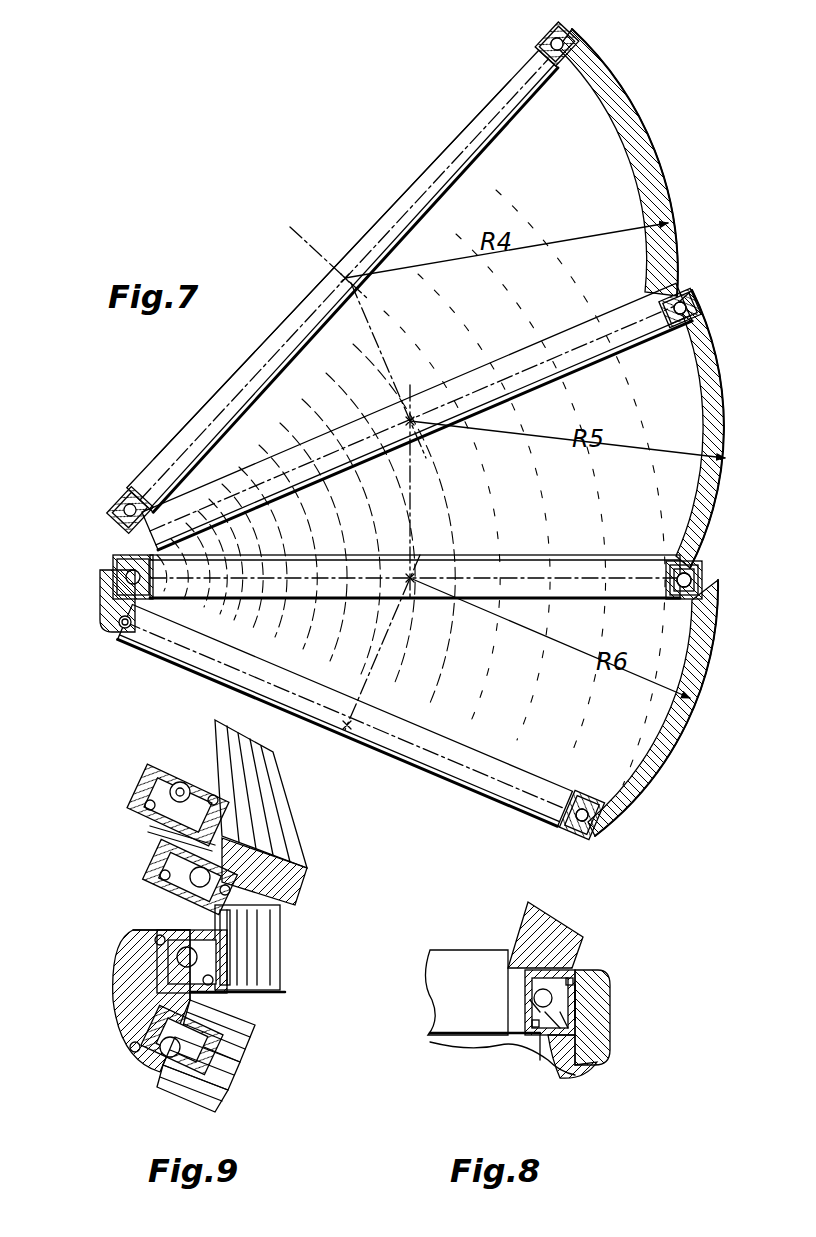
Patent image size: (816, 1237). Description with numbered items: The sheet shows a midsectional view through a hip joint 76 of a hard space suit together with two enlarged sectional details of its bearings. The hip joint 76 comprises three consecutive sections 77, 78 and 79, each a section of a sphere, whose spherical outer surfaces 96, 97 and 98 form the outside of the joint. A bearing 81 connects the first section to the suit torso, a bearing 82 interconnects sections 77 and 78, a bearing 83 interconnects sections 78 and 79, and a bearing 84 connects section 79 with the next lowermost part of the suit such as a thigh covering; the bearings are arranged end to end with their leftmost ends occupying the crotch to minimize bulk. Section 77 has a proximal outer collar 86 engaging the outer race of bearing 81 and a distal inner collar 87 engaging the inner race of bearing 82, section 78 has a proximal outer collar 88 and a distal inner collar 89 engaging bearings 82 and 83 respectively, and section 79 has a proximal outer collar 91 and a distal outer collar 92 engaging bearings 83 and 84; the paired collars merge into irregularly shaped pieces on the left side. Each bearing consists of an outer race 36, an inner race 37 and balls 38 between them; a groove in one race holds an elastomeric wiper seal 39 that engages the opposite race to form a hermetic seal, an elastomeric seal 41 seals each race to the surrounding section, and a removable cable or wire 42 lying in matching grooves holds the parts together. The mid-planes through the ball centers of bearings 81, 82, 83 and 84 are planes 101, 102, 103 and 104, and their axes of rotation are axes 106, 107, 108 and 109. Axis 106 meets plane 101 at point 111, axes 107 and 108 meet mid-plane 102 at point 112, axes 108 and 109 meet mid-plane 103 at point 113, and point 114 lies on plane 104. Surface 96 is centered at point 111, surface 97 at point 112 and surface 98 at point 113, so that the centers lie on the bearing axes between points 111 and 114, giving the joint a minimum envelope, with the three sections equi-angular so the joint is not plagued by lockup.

In FIG. 9, the outer race 36 is at (147, 790).
In FIG. 8, the outer race 36 is at (588, 1002).
In FIG. 9, the inner race 37 is at (190, 770).
In FIG. 8, the inner race 37 is at (540, 1040).
In FIG. 9, the balls 38 is at (168, 775).
In FIG. 8, the balls 38 is at (555, 972).
In FIG. 9, the elastomeric wiper seal 39 is at (238, 822).
In FIG. 8, the elastomeric wiper seal 39 is at (560, 1065).
In FIG. 9, the elastomeric seal 41 is at (175, 815).
In FIG. 8, the elastomeric seal 41 is at (572, 1025).
In FIG. 9, the cable or wire 42 is at (168, 800).
In FIG. 8, the cable or wire 42 is at (580, 985).
In FIG. 7, the hip joint 76 is at (392, 203).
In FIG. 7, the section 77 is at (597, 157).
In FIG. 9, the section 77 is at (268, 788).
In FIG. 7, the section 78 is at (708, 357).
In FIG. 9, the section 78 is at (275, 888).
In FIG. 8, the section 78 is at (548, 920).
In FIG. 7, the section 79 is at (662, 645).
In FIG. 9, the section 79 is at (243, 1023).
In FIG. 8, the section 79 is at (590, 1052).
In FIG. 7, the bearing 81 is at (570, 30).
In FIG. 9, the bearing 81 is at (143, 768).
In FIG. 7, the bearing 82 is at (698, 298).
In FIG. 9, the bearing 82 is at (150, 862).
In FIG. 7, the bearing 83 is at (705, 575).
In FIG. 9, the bearing 83 is at (140, 940).
In FIG. 8, the bearing 83 is at (605, 968).
In FIG. 7, the bearing 84 is at (590, 840).
In FIG. 9, the bearing 84 is at (150, 1085).
In FIG. 7, the proximal outer collar 86 is at (582, 43).
In FIG. 9, the proximal outer collar 86 is at (136, 824).
In FIG. 7, the distal inner collar 87 is at (672, 318).
In FIG. 9, the distal inner collar 87 is at (165, 840).
In FIG. 7, the proximal outer collar 88 is at (744, 316).
In FIG. 9, the proximal outer collar 88 is at (277, 947).
In FIG. 7, the distal inner collar 89 is at (667, 572).
In FIG. 9, the distal inner collar 89 is at (228, 930).
In FIG. 8, the distal inner collar 89 is at (505, 990).
In FIG. 7, the proximal outer collar 91 is at (749, 602).
In FIG. 9, the proximal outer collar 91 is at (124, 1000).
In FIG. 8, the proximal outer collar 91 is at (612, 1015).
In FIG. 7, the distal outer collar 92 is at (628, 836).
In FIG. 9, the distal outer collar 92 is at (118, 958).
In FIG. 7, the outer surface 96 is at (632, 90).
In FIG. 7, the outer surface 97 is at (727, 410).
In FIG. 7, the outer surface 98 is at (703, 703).
In FIG. 7, the mid-plane 101 is at (240, 383).
In FIG. 7, the mid-plane 102 is at (490, 395).
In FIG. 7, the mid-plane 103 is at (492, 577).
In FIG. 7, the mid-plane 104 is at (458, 780).
In FIG. 7, the axis of rotation 106 is at (305, 235).
In FIG. 7, the axis of rotation 107 is at (378, 336).
In FIG. 7, the axis of rotation 108 is at (413, 504).
In FIG. 7, the axis of rotation 109 is at (385, 640).
In FIG. 7, the point 111 is at (345, 276).
In FIG. 7, the point 112 is at (410, 424).
In FIG. 7, the point 113 is at (411, 578).
In FIG. 7, the point 114 is at (350, 722).